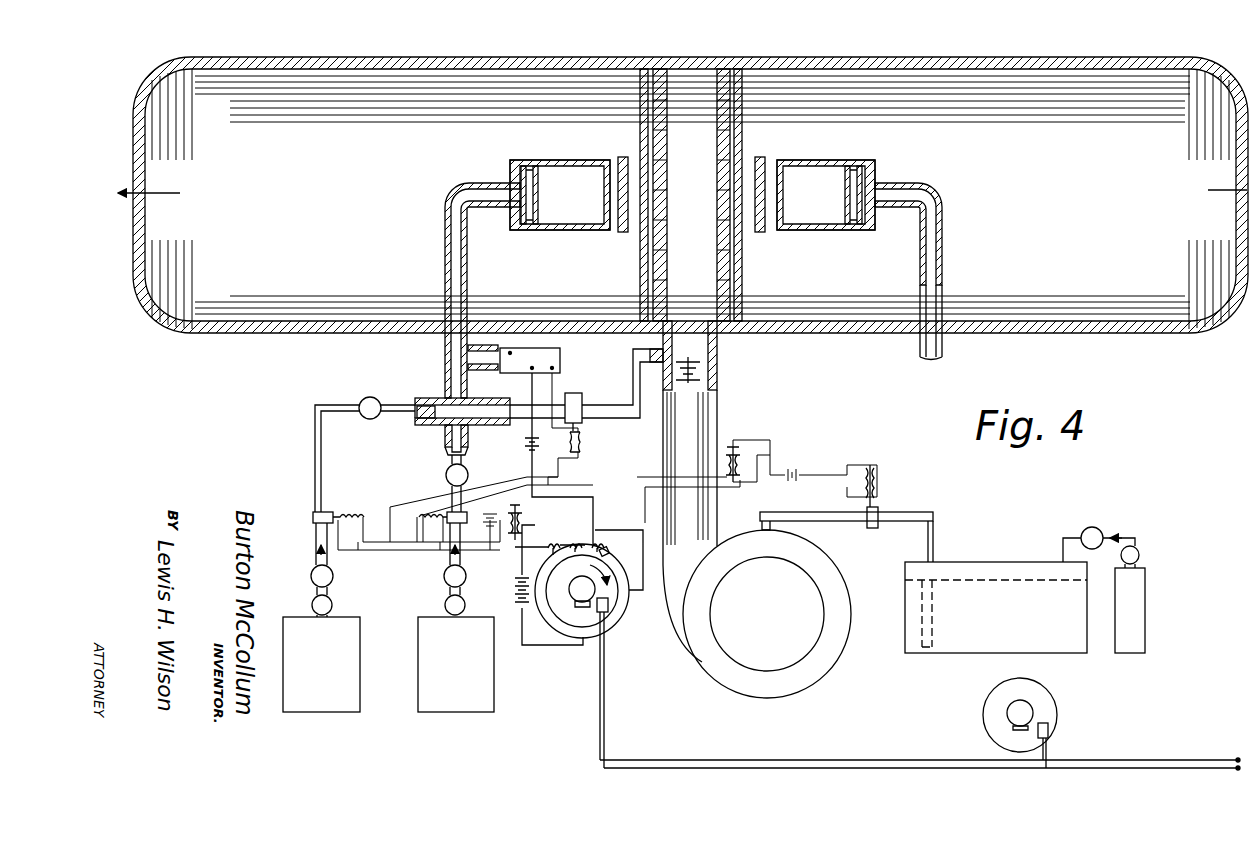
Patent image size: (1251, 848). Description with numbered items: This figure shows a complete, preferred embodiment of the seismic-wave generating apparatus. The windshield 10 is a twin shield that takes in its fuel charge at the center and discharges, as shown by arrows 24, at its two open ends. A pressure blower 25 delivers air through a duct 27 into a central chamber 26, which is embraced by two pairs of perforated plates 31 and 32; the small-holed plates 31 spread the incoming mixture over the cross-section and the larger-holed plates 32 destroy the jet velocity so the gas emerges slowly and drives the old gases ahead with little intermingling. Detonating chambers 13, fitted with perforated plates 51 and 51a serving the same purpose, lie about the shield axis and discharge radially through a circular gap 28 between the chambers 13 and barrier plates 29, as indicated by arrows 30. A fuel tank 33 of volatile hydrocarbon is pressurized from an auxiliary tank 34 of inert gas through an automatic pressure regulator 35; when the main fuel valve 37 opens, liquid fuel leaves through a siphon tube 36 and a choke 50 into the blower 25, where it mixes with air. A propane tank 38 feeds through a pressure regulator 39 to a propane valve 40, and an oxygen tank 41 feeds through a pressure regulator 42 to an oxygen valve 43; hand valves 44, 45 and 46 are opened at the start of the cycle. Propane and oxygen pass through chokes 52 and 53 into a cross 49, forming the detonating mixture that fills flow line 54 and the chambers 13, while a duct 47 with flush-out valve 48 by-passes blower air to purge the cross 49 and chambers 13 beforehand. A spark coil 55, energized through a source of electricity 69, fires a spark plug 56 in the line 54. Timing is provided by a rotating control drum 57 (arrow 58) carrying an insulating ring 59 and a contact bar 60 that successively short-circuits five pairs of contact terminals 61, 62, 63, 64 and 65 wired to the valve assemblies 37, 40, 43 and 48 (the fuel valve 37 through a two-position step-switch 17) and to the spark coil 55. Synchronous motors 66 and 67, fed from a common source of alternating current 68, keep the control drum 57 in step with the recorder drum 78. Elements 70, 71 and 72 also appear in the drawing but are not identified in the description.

The windshield 10 is at (984, 57).
The arrows 24 is at (168, 193).
The detonating chambers 13 is at (570, 160).
The perforated plate 51 is at (523, 166).
The perforated plate 51a is at (540, 195).
The circular gap 28 is at (618, 157).
The barrier plates 29 is at (627, 157).
The arrows 30 is at (597, 224).
The central chamber 26 is at (691, 195).
The perforated plates 31 is at (717, 290).
The perforated plates 32 is at (640, 275).
The duct 27 is at (710, 400).
The valve 70 is at (705, 352).
The flow line 54 is at (445, 270).
The spark plug 56 is at (445, 347).
The spark coil 55 is at (533, 348).
The duct 47 is at (633, 358).
The flush-out valve 48 is at (580, 393).
The cross 49 is at (445, 398).
The choke 53 is at (418, 402).
The check valve 71 is at (362, 397).
The check valve 72 is at (446, 473).
The choke 52 is at (448, 447).
The source of electricity 69 is at (525, 443).
The oxygen valve 43 is at (313, 514).
The propane valve 40 is at (447, 512).
The pressure regulator 42 is at (333, 573).
The automatic pressure regulator 39 is at (466, 573).
The hand valve 46 is at (312, 604).
The hand valve 45 is at (445, 604).
The oxygen tank 41 is at (321, 664).
The propane tank 38 is at (428, 692).
The two-position step-switch 17 is at (520, 520).
The main fuel valve 37 is at (878, 512).
The choke 50 is at (778, 527).
The siphon tube 36 is at (933, 540).
The pressure blower 25 is at (767, 614).
The fuel tank 33 is at (996, 607).
The automatic pressure regulator 35 is at (1100, 530).
The hand valve 44 is at (1139, 555).
The auxiliary tank 34 is at (1140, 603).
The control drum 57 is at (582, 576).
The arrow 58 is at (618, 575).
The insulating ring 59 is at (625, 610).
The contact bar 60 is at (609, 551).
The contact terminals 61 is at (635, 592).
The contact terminals 62 is at (580, 648).
The contact terminals 63 is at (546, 547).
The contact terminals 64 is at (575, 540).
The contact terminals 65 is at (600, 545).
The synchronous motor 66 is at (606, 620).
The recorder drum 78 is at (1052, 700).
The synchronous motor 67 is at (1048, 730).
The source of alternating current 68 is at (1236, 760).